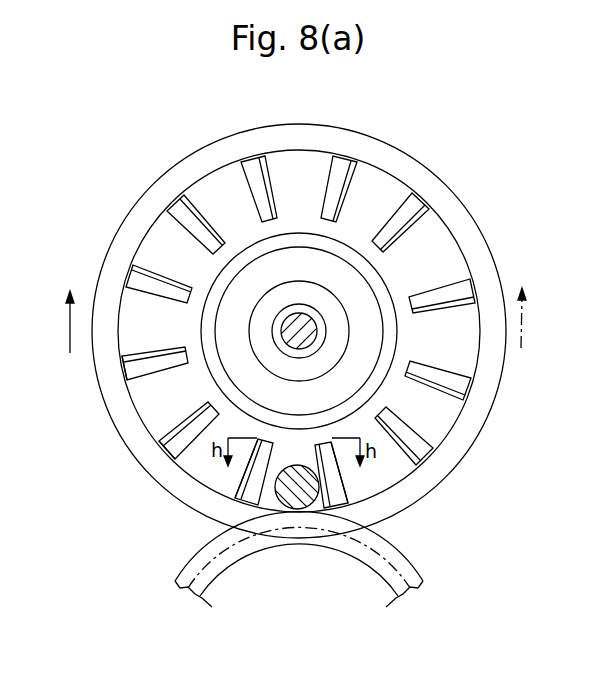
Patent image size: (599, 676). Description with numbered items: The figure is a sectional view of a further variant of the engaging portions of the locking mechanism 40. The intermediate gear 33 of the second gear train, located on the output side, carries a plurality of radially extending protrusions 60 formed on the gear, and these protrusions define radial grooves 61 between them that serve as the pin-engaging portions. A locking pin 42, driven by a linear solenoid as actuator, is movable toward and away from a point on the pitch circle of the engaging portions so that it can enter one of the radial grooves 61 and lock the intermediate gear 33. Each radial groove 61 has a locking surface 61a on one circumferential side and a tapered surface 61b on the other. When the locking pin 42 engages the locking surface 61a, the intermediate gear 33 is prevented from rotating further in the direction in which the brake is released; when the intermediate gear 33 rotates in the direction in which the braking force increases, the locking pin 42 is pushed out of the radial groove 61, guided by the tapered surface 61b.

The intermediate gear 33 is at (153, 190).
The radially extending protrusions 60 is at (257, 185).
The radial grooves 61 is at (443, 405).
The locking surface 61a is at (348, 490).
The tapered surface 61b is at (125, 373).
The locking mechanism 40 is at (297, 516).
The locking pin 42 is at (326, 486).